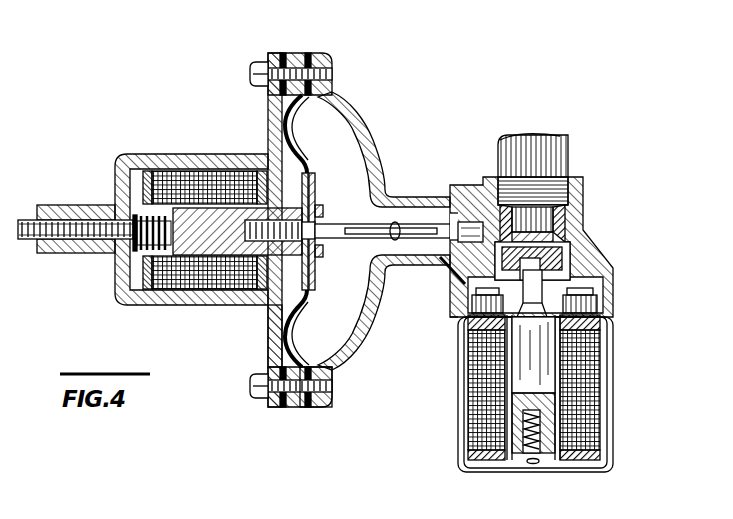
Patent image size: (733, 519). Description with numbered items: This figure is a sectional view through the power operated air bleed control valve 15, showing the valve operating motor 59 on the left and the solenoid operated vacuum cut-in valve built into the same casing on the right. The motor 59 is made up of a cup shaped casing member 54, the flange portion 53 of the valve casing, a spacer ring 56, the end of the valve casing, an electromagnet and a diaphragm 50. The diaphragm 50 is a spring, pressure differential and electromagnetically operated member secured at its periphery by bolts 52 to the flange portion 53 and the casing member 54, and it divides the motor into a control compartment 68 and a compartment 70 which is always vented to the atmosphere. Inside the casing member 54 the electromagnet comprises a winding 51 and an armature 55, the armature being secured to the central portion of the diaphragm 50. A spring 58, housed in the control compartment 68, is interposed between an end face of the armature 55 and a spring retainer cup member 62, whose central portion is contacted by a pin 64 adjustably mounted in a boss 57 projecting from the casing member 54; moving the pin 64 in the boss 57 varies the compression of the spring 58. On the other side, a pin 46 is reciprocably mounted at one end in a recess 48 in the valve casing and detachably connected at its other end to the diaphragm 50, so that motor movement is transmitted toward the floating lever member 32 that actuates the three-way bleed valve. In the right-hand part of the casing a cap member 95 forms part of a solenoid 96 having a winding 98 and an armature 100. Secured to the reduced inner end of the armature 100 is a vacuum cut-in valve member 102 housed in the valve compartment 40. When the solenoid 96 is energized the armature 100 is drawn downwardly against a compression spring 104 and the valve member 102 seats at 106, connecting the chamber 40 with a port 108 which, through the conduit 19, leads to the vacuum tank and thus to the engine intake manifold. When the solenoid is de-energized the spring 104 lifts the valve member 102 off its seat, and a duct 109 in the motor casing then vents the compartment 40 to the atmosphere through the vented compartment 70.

The power operated air bleed control valve 15 is at (403, 183).
The conduit 19 is at (560, 152).
The floating lever member 32 is at (390, 227).
The valve compartment 40 is at (565, 248).
The pin 46 is at (357, 240).
The recess 48 is at (470, 222).
The diaphragm 50 is at (297, 150).
The winding 51 is at (177, 178).
The bolts 52 is at (263, 398).
The flange portion 53 is at (324, 402).
The cup shaped casing member 54 is at (195, 298).
The armature 55 is at (185, 243).
The spacer ring 56 is at (293, 53).
The boss 57 is at (88, 210).
The spring 58 is at (157, 247).
The motor 59 is at (145, 154).
The spring retainer cup member 62 is at (157, 242).
The pin 64 is at (63, 222).
The control compartment 68 is at (277, 290).
The compartment 70 is at (357, 157).
The cap member 95 is at (613, 402).
The solenoid 96 is at (458, 423).
The winding 98 is at (582, 367).
The armature 100 is at (530, 355).
The vacuum cut-in valve member 102 is at (562, 272).
The compression spring 104 is at (527, 464).
The seat 106 is at (545, 293).
The port 108 is at (547, 230).
The duct 109 is at (460, 267).